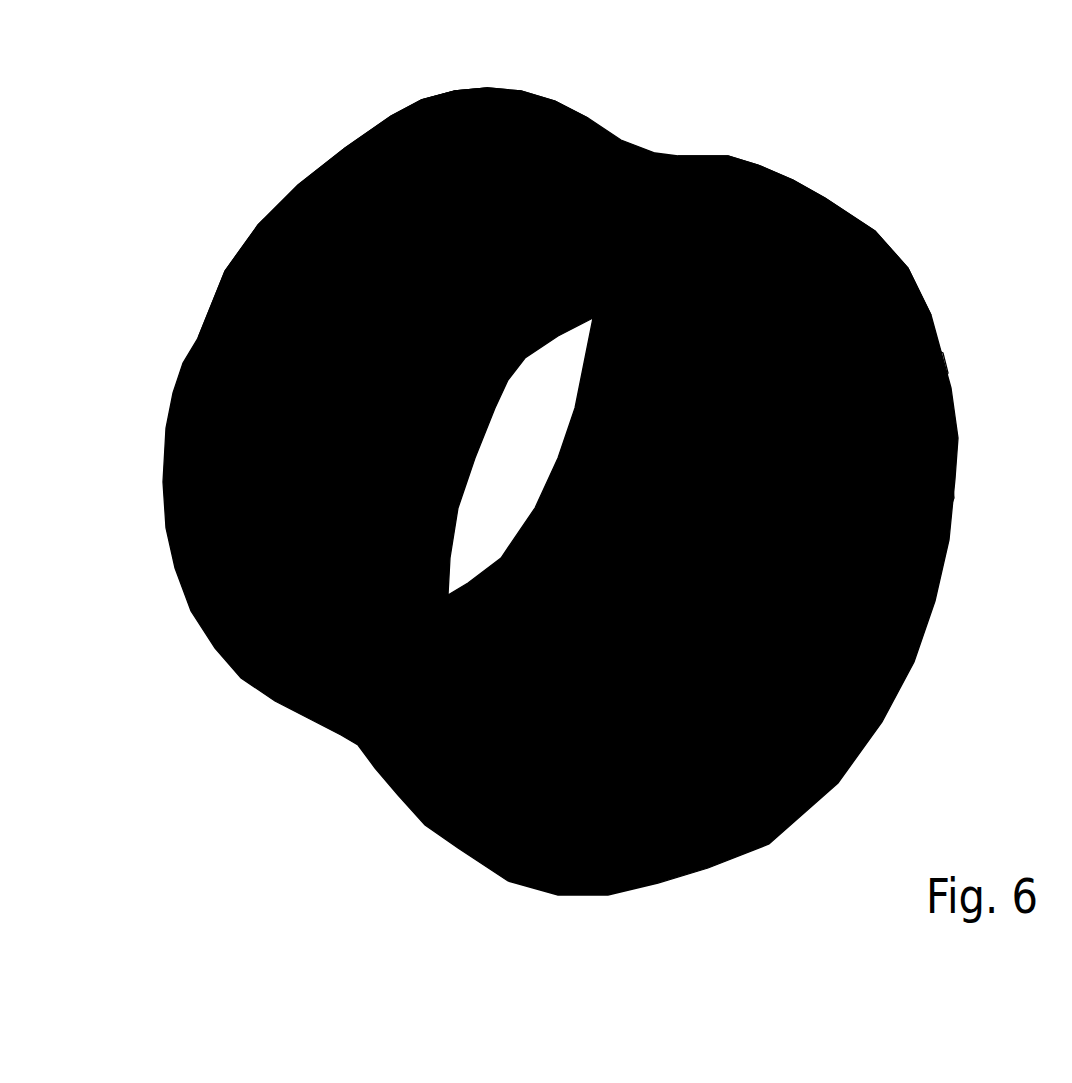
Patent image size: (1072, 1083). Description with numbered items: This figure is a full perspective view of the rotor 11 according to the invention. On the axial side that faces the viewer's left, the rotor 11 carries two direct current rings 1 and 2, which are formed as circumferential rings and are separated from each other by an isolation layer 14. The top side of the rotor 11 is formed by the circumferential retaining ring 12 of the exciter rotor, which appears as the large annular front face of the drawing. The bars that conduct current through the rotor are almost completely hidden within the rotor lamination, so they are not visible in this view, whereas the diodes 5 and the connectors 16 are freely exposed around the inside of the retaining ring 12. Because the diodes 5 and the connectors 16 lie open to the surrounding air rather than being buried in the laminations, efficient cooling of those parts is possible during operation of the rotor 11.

The direct current ring 1 is at (336, 137).
The direct current ring 2 is at (288, 174).
The diodes 5 is at (942, 498).
The rotor 11 is at (928, 805).
The retaining ring 12 is at (747, 157).
The isolation layer 14 is at (481, 82).
The connectors 16 is at (947, 382).